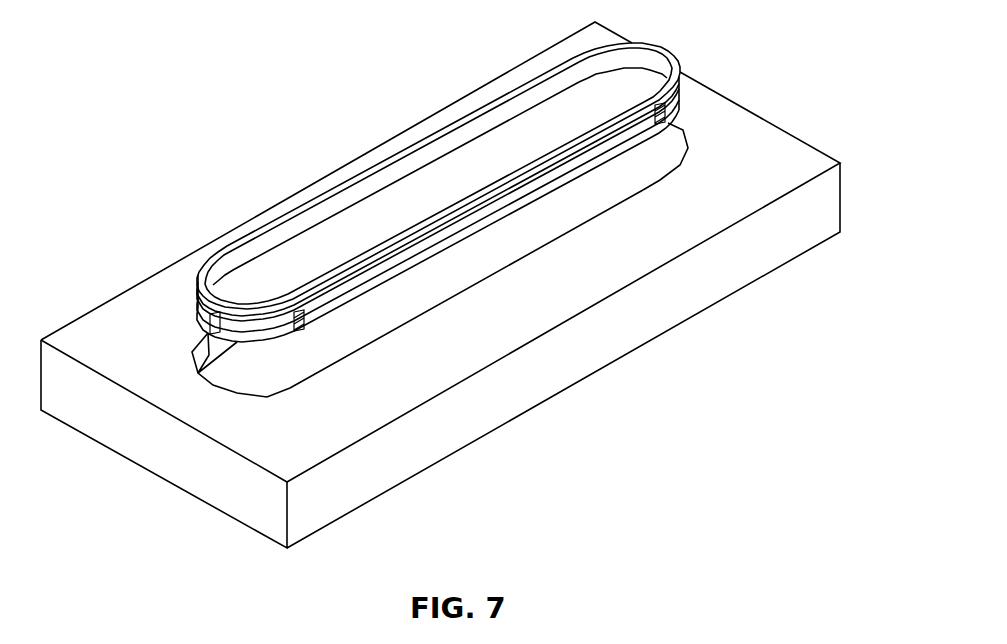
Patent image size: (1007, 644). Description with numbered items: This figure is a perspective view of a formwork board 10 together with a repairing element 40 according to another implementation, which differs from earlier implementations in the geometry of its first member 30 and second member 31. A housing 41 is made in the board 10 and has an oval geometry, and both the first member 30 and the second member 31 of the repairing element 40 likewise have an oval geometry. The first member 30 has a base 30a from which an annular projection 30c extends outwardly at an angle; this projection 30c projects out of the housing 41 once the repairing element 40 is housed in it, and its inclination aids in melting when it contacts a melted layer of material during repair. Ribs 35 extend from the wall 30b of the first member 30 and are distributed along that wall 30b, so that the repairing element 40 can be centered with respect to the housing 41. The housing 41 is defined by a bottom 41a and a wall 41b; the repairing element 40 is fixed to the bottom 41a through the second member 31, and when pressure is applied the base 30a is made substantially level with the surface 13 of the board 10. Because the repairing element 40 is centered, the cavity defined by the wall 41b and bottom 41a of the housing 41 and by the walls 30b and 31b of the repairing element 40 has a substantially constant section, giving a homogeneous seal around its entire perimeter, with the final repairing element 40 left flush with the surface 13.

The board 10 is at (440, 285).
The surface 13 is at (740, 66).
The first member 30 is at (521, 176).
The base 30a is at (438, 176).
The wall 30b is at (672, 102).
The annular projection 30c is at (515, 92).
The second member 31 is at (438, 236).
The wall 31b is at (390, 278).
The ribs 35 is at (305, 328).
The repairing element 40 is at (518, 223).
The housing 41 is at (484, 260).
The bottom 41a is at (547, 246).
The wall 41b is at (672, 138).